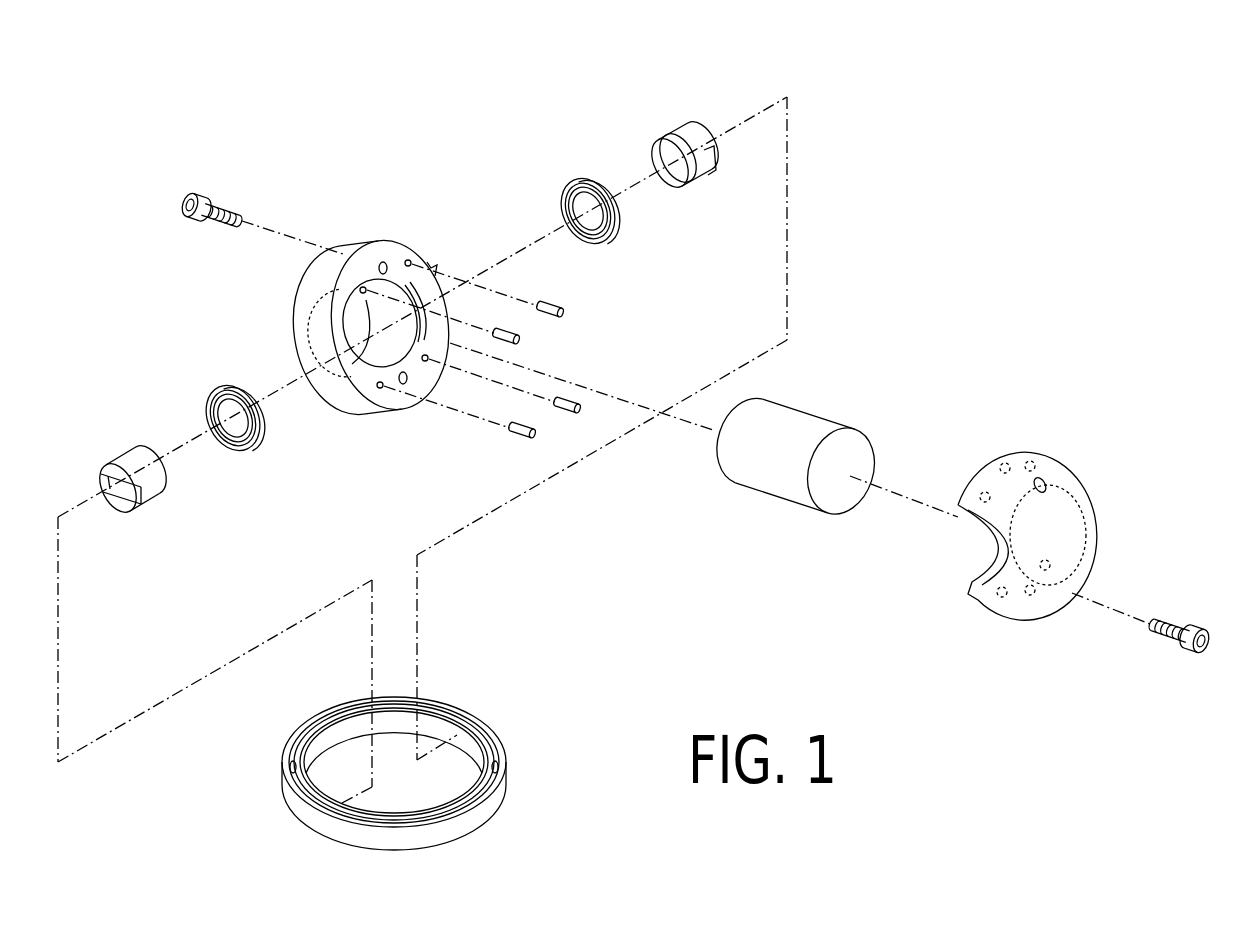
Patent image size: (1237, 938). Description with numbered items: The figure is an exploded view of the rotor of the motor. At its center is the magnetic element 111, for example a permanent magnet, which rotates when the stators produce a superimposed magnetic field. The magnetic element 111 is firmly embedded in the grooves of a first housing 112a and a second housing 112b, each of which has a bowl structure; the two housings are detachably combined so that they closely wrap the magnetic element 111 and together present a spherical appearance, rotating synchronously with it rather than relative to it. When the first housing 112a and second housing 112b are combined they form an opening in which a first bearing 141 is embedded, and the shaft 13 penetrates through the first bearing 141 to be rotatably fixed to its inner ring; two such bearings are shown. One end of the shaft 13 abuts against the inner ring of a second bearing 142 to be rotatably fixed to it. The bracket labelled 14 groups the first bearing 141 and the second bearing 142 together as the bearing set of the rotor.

The shaft 13 is at (668, 118).
The seal assembly 14 is at (404, 510).
The first bearing 141 is at (240, 455).
The second bearing 142 is at (313, 718).
The magnetic element 111 is at (815, 417).
The first housing 112a is at (380, 238).
The second housing 112b is at (1058, 452).